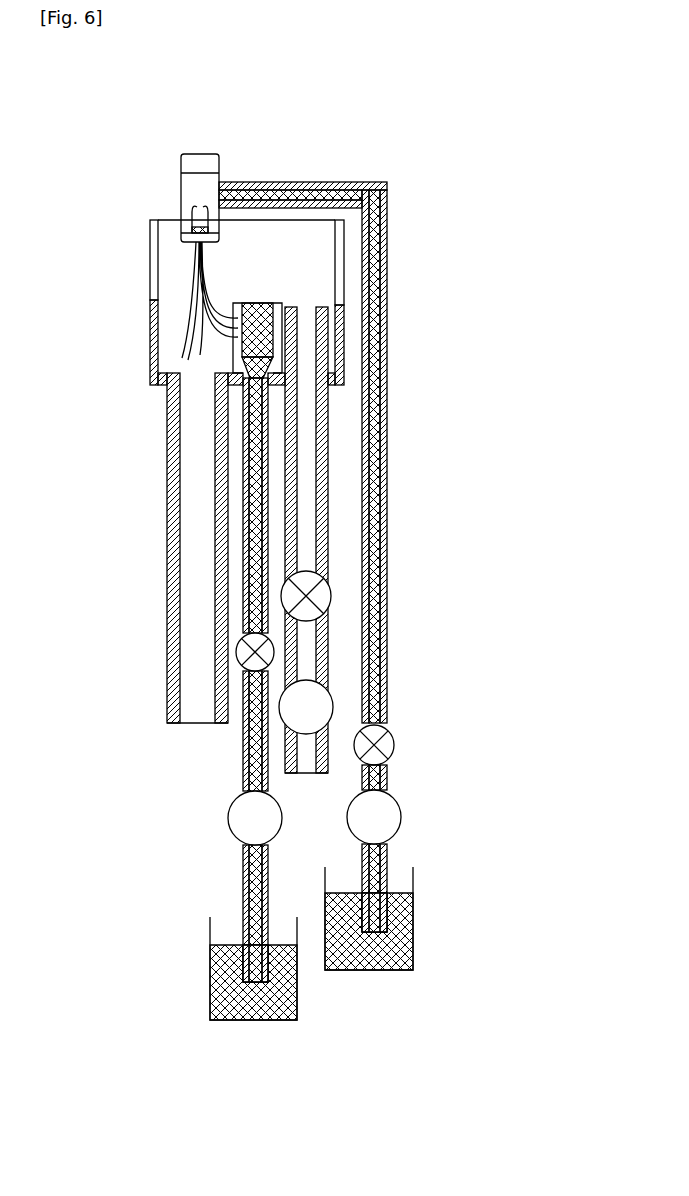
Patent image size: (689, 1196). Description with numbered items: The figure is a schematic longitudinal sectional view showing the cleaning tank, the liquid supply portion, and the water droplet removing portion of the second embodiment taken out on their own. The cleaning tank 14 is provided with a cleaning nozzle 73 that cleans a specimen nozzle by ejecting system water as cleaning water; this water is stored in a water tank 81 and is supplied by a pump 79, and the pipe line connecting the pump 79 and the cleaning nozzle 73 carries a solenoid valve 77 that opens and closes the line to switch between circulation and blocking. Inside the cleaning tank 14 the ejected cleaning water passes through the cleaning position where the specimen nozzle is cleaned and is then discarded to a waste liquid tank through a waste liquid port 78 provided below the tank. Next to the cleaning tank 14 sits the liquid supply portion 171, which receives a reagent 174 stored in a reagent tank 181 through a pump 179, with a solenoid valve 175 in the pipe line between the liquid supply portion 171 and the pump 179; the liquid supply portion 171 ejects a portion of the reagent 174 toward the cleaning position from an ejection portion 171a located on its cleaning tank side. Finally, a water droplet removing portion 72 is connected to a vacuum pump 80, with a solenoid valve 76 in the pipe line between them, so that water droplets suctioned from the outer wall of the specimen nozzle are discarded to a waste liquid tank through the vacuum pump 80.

The cleaning tank 14 is at (149, 320).
The water droplet removing portion 72 is at (304, 282).
The cleaning nozzle 73 is at (197, 155).
The solenoid valve 76 is at (331, 598).
The solenoid valve 77 is at (393, 746).
The waste liquid port 78 is at (167, 540).
The pump 79 is at (401, 815).
The vacuum pump 80 is at (333, 707).
The water tank 81 is at (414, 952).
The liquid supply portion 171 is at (257, 282).
The ejection portion 171a is at (238, 303).
The reagent 174 is at (210, 970).
The solenoid valve 175 is at (236, 651).
The pump 179 is at (228, 818).
The reagent tank 181 is at (298, 1003).